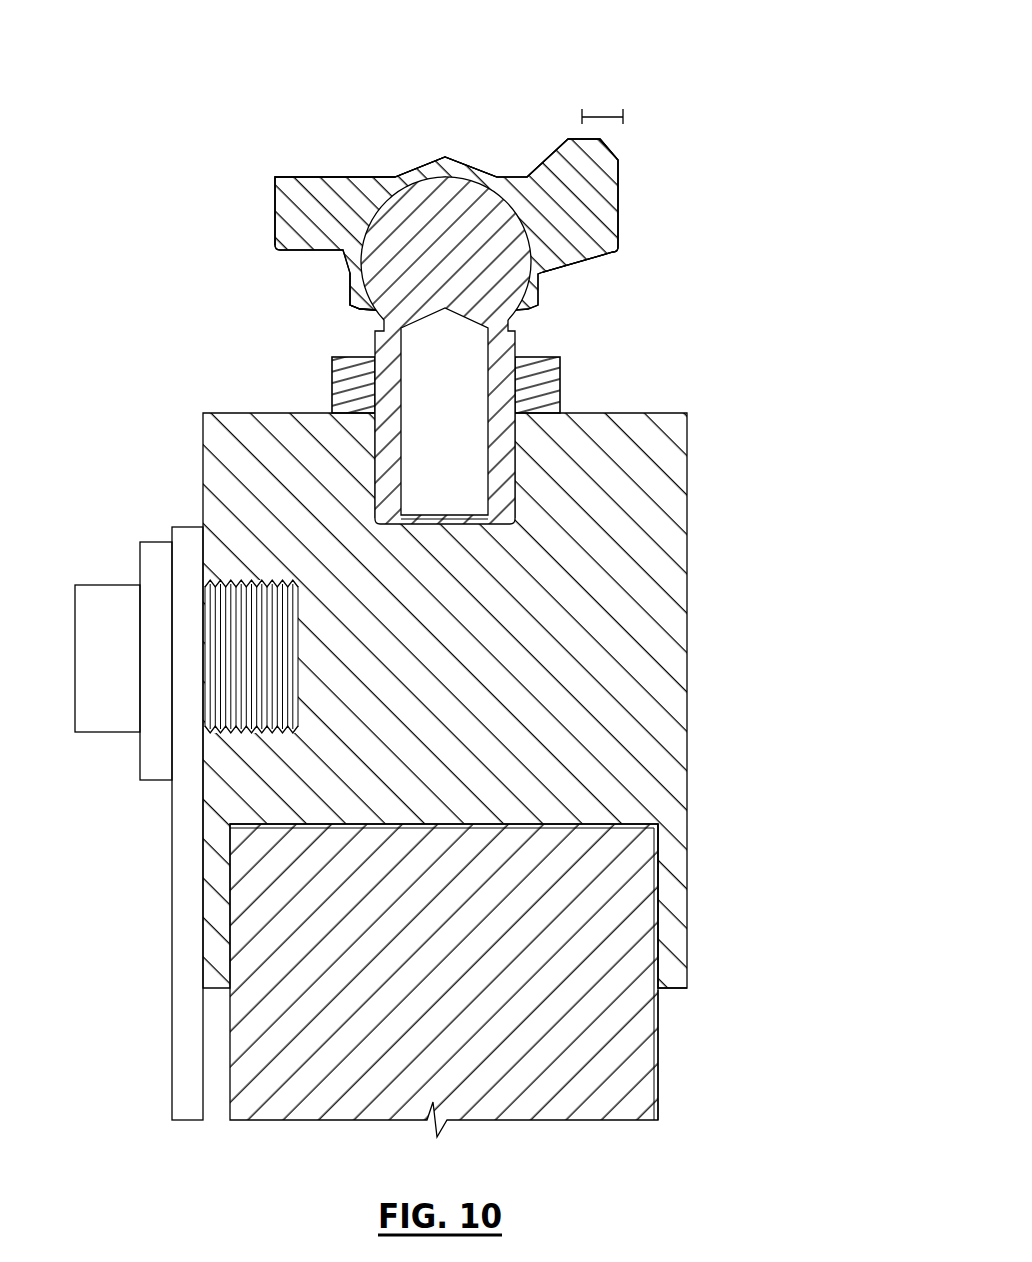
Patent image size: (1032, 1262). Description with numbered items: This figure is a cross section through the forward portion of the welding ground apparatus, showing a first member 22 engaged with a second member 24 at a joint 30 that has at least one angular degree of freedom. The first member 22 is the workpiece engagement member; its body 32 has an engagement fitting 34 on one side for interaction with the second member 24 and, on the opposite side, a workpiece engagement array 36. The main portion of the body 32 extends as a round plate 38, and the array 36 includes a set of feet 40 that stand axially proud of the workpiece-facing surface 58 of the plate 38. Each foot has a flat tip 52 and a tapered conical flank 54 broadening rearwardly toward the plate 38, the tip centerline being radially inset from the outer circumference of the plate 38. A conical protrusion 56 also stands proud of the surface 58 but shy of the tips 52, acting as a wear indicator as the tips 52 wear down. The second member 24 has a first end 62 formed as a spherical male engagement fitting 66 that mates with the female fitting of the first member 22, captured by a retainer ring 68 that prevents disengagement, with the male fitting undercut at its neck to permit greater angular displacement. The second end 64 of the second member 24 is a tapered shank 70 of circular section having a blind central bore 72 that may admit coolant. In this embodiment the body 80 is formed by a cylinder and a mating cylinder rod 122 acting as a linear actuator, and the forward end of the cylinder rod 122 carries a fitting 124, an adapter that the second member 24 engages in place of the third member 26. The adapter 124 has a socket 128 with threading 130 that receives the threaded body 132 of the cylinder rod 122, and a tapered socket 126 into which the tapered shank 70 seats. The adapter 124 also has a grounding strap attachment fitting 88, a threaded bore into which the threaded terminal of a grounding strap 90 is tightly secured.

The first member 22 is at (545, 183).
The second member 24 is at (553, 368).
The third member 26 is at (472, 775).
The joint 30 is at (438, 350).
The body 32 is at (572, 252).
The engagement fitting 34 is at (357, 248).
The engagement array 36 is at (345, 165).
The plate 38 is at (570, 212).
The feet 40 is at (612, 100).
The tip 52 is at (573, 135).
The flank 54 is at (545, 158).
The protrusion 56 is at (423, 163).
The workpiece-facing surface 58 is at (300, 177).
The first end 62 is at (335, 312).
The second end 64 is at (357, 397).
The engagement fitting 66 is at (380, 216).
The retainer ring 68 is at (358, 287).
The shank 70 is at (505, 390).
The central bore 72 is at (428, 436).
The body 80 is at (451, 823).
The grounding strap attachment fitting 88 is at (230, 695).
The grounding strap 90 is at (176, 830).
The cylinder rod 122 is at (644, 1095).
The fitting 124 is at (603, 518).
The tapered socket 126 is at (510, 457).
The socket 128 is at (656, 956).
The threading 130 is at (656, 898).
The body 132 is at (644, 1040).